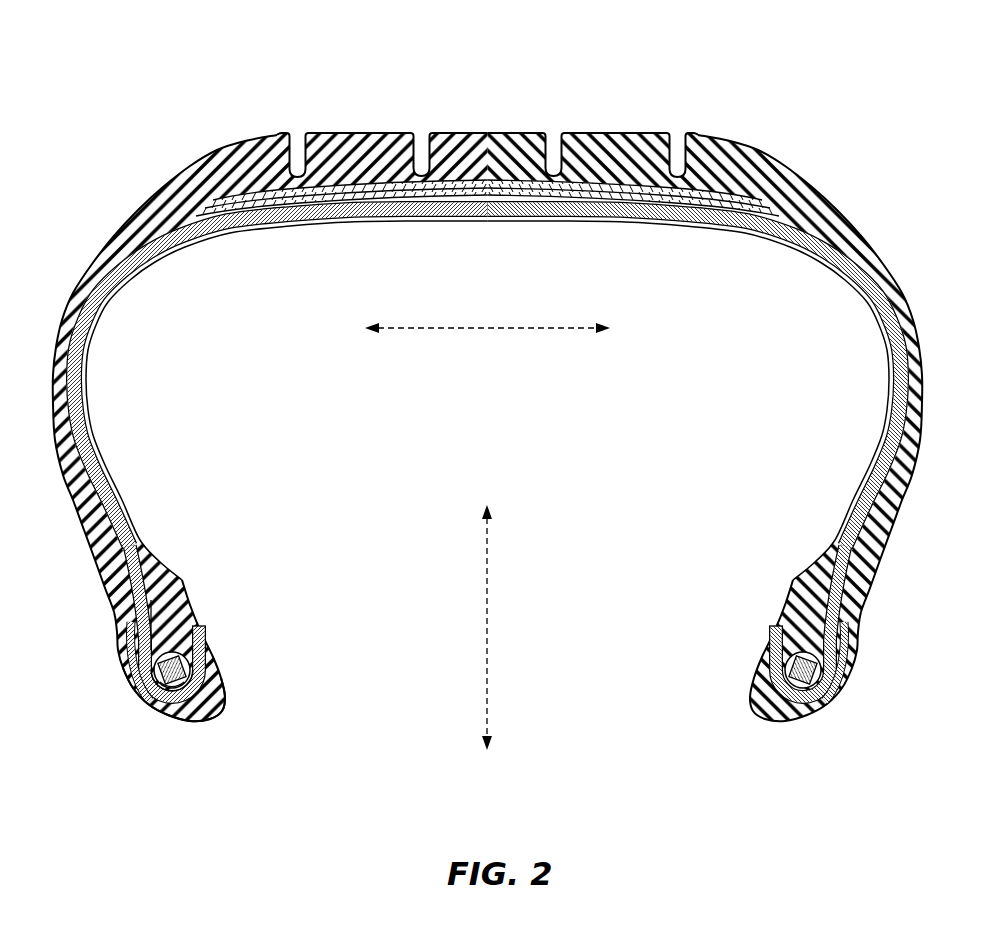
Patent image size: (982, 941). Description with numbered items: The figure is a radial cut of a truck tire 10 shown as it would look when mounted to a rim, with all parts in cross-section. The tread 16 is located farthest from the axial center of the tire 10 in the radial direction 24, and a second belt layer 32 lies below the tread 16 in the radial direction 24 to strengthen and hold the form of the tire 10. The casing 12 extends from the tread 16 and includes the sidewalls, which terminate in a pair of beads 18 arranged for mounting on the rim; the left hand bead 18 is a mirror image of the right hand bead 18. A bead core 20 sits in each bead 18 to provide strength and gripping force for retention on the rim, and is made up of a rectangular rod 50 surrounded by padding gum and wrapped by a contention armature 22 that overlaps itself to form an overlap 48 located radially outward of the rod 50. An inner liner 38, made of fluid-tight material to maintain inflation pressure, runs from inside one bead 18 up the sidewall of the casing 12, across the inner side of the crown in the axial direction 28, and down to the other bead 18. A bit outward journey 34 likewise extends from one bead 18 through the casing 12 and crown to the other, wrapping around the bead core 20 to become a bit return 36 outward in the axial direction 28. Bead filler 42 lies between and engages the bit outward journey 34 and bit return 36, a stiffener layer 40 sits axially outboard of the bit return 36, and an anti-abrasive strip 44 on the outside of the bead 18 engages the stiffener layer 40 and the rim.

The tire 10 is at (463, 380).
The casing 12 is at (68, 292).
The tread 16 is at (485, 150).
The bead 18 is at (120, 660).
The bead core 20 is at (188, 658).
The contention armature 22 is at (170, 693).
The radial direction 24 is at (487, 625).
The axial direction 28 is at (494, 330).
The second belt layer 32 is at (370, 185).
The bit outward journey 34 is at (140, 535).
The bit return 36 is at (113, 585).
The inner liner 38 is at (214, 694).
The stiffener layer 40 is at (127, 640).
The bead filler 42 is at (165, 610).
The anti-abrasive strip 44 is at (132, 677).
The overlap 48 is at (170, 648).
The rod 50 is at (165, 688).